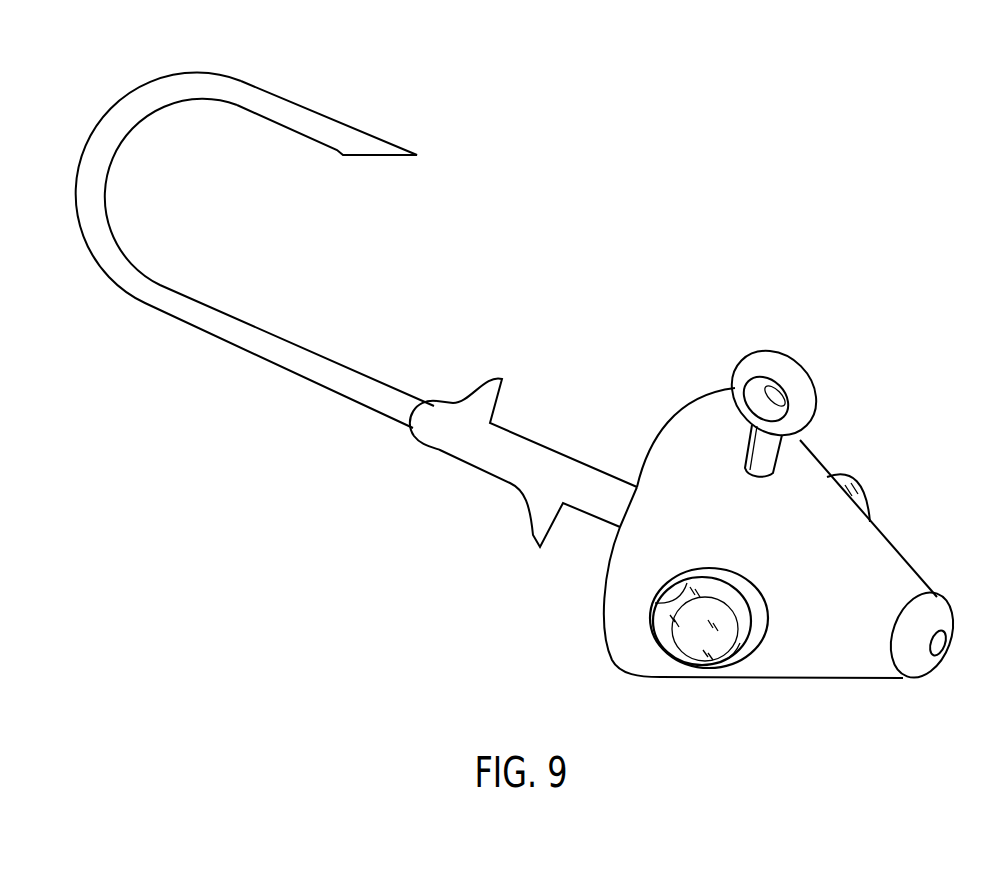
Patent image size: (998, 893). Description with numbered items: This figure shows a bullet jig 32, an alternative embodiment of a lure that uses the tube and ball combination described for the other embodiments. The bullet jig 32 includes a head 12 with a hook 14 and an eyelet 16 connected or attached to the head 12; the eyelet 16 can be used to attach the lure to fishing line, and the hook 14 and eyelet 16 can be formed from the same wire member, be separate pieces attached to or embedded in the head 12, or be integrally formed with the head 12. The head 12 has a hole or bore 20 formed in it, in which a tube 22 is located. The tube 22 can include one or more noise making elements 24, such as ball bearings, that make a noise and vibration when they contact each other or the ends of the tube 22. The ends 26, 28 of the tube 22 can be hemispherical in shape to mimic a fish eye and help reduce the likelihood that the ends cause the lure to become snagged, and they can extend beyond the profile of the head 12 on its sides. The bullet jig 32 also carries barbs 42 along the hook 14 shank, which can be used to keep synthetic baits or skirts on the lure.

The head 12 is at (897, 572).
The hook 14 is at (368, 133).
The eyelet 16 is at (813, 385).
The bore 20 is at (663, 602).
The tube 22 is at (740, 643).
The noise making elements 24 is at (695, 655).
The end of tube 26 is at (865, 492).
The end of tube 28 is at (670, 637).
The bullet jig 32 is at (905, 280).
The barbs 42 is at (495, 415).